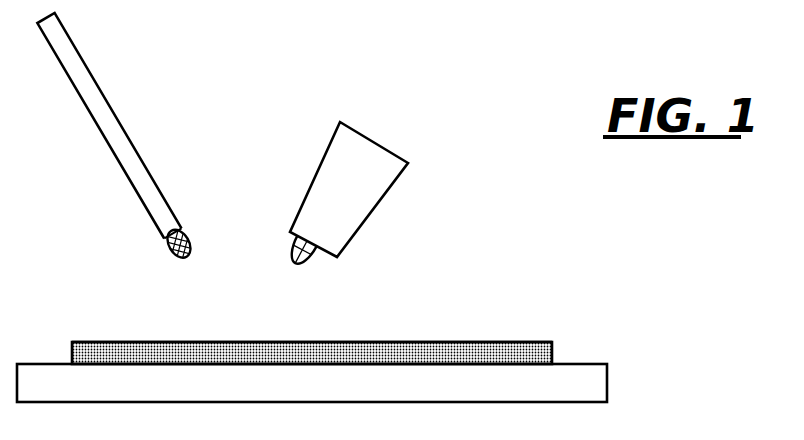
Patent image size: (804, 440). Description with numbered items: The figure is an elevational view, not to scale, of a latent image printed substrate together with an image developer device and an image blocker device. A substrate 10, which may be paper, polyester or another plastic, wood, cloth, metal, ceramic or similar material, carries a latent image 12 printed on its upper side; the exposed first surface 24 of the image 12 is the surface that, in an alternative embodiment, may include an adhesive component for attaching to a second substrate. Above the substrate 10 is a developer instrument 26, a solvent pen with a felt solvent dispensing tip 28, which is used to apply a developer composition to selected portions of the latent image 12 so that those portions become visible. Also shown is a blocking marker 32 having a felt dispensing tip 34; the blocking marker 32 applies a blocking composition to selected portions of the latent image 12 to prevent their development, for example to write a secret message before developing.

The substrate 10 is at (359, 396).
The latent image 12 is at (463, 362).
The first surface 24 is at (377, 336).
The developer instrument 26 is at (140, 118).
The felt solvent dispensing tip 28 is at (166, 248).
The blocking marker 32 is at (369, 192).
The felt dispensing tip 34 is at (296, 254).